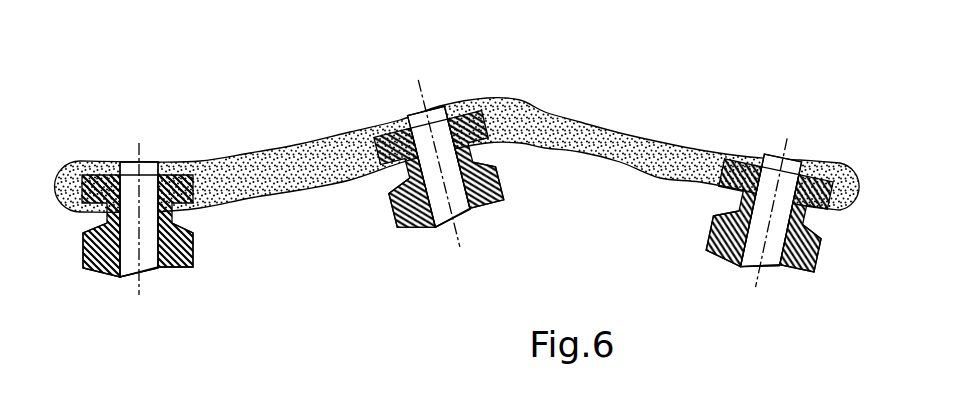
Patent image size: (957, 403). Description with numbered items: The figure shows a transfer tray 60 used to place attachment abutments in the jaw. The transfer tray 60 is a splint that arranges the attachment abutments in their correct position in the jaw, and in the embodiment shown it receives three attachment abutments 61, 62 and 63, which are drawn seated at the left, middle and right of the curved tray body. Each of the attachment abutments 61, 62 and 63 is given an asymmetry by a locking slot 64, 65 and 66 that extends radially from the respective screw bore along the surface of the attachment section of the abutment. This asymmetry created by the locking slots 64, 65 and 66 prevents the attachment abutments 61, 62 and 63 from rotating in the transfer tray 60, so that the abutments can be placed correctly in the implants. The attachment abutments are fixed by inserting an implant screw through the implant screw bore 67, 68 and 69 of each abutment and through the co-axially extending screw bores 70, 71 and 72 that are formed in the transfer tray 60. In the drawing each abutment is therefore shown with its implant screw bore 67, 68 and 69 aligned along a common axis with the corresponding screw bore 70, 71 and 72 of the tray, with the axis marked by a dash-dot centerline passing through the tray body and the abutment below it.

The transfer tray 60 is at (550, 98).
The attachment abutment 61 is at (136, 219).
The attachment abutment 62 is at (429, 159).
The attachment abutment 63 is at (757, 193).
The locking slot 64 is at (165, 170).
The locking slot 65 is at (448, 104).
The locking slot 66 is at (807, 160).
The implant screw bore 67 is at (152, 252).
The implant screw bore 68 is at (458, 190).
The implant screw bore 69 is at (777, 250).
The screw bore 70 is at (128, 167).
The screw bore 71 is at (412, 116).
The screw bore 72 is at (770, 157).